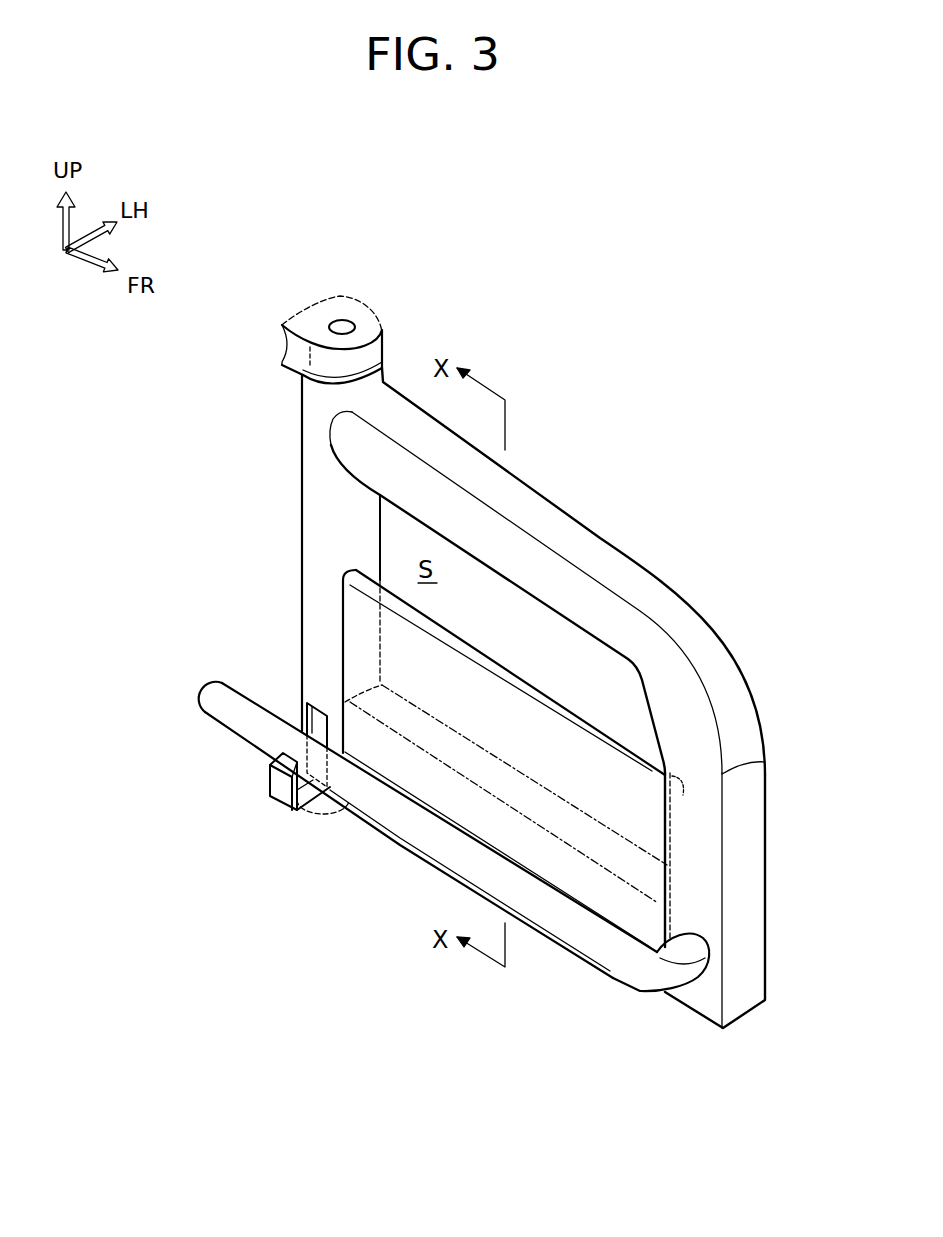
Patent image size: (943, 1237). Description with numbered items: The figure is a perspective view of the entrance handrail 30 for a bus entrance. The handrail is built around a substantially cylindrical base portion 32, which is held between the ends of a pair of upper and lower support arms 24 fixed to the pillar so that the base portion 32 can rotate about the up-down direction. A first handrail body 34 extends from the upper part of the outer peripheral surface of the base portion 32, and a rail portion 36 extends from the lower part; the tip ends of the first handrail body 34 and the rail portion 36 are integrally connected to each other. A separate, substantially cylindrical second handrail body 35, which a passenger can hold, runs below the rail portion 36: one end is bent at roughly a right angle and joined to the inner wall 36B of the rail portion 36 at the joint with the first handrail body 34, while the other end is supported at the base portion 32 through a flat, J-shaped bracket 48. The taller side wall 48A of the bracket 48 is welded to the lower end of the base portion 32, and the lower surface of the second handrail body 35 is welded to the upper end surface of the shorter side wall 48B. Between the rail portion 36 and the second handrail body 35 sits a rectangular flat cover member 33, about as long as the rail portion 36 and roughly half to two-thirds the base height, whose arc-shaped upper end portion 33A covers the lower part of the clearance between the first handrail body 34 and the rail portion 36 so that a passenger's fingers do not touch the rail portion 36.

The support arm 24 is at (372, 296).
The entrance handrail 30 is at (507, 707).
The base portion 32 is at (327, 525).
The cover member 33 is at (513, 755).
The upper end portion of the cover member 33A is at (580, 713).
The first handrail body 34 is at (633, 580).
The second handrail body 35 is at (405, 845).
The rail portion 36 is at (658, 904).
The inner wall 36B is at (600, 890).
The bracket 48 is at (227, 753).
The side wall of the bracket (higher) 48A is at (310, 703).
The side wall of the bracket (lower) 48B is at (280, 780).